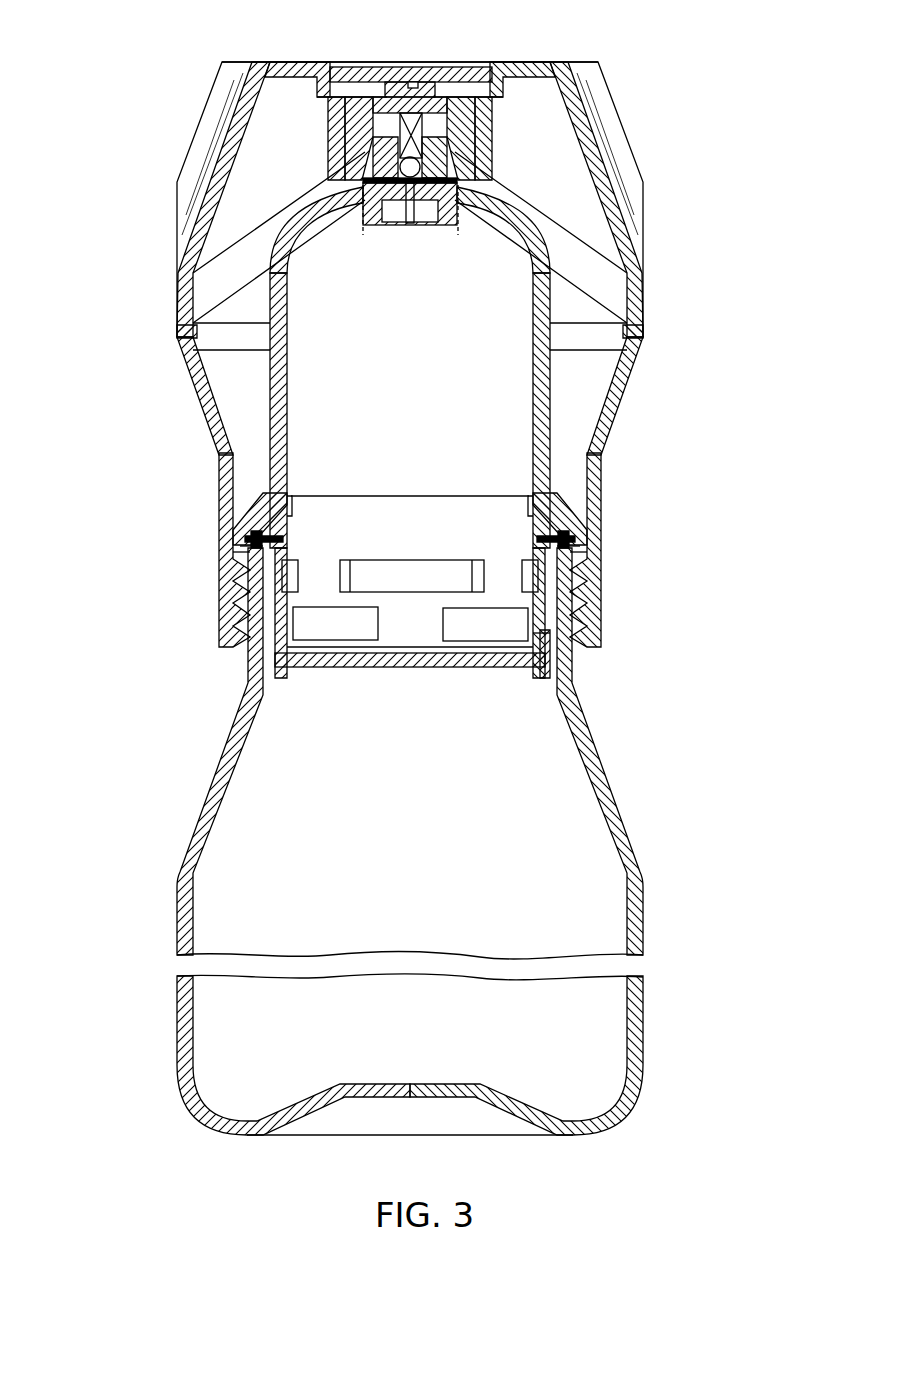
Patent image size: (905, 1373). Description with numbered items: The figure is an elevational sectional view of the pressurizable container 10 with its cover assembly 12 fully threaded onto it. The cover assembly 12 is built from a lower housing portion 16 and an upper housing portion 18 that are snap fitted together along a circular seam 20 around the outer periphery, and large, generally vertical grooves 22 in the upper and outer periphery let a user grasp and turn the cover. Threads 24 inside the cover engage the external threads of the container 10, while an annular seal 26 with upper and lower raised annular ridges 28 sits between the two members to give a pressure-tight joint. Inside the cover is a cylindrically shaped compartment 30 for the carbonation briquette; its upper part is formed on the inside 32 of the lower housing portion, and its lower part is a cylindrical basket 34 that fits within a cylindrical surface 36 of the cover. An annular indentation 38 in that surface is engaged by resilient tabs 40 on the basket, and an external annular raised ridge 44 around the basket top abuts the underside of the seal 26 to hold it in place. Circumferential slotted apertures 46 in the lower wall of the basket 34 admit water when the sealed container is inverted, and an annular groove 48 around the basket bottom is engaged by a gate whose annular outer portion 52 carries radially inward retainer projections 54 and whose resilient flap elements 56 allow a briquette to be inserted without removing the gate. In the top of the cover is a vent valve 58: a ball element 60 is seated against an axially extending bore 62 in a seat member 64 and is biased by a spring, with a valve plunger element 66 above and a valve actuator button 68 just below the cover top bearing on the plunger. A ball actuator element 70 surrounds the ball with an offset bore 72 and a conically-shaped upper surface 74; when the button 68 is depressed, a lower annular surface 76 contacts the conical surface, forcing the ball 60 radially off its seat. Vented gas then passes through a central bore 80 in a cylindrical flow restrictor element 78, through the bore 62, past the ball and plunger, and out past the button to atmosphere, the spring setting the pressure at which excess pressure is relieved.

The pressurizable container 10 is at (628, 788).
The cover assembly 12 is at (616, 60).
The lower housing portion 16 is at (622, 405).
The upper housing portion 18 is at (636, 190).
The circular seam 20 is at (186, 331).
The grooves 22 is at (613, 122).
The threads 24 is at (590, 578).
The annular seal 26 is at (240, 542).
The raised annular ridges 28 is at (242, 552).
The cylindrically shaped compartment 30 is at (400, 399).
The inside of the lower housing portion 32 is at (289, 302).
The basket 34 is at (405, 494).
The cylindrical surface 36 is at (284, 536).
The annular indentation 38 is at (265, 505).
The resilient tabs 40 is at (290, 507).
The external annular raised ridge 44 is at (283, 552).
The slotted apertures 46 is at (388, 589).
The annular groove 48 is at (540, 668).
The annular outer portion 52 is at (550, 655).
The retainer projections 54 is at (300, 650).
The flap elements 56 is at (335, 668).
The vent valve 58 is at (420, 62).
The ball element 60 is at (422, 166).
The axially extending bore 62 is at (457, 192).
The seat member 64 is at (426, 130).
The valve plunger element 66 is at (402, 112).
The valve actuator button 68 is at (470, 70).
The ball actuator element 70 is at (370, 177).
The axially extending bore 72 is at (370, 163).
The conically-shaped upper surface 74 is at (378, 152).
The lower annular surface 76 is at (388, 150).
The flow restrictor element 78 is at (403, 224).
The central bore 80 is at (422, 225).